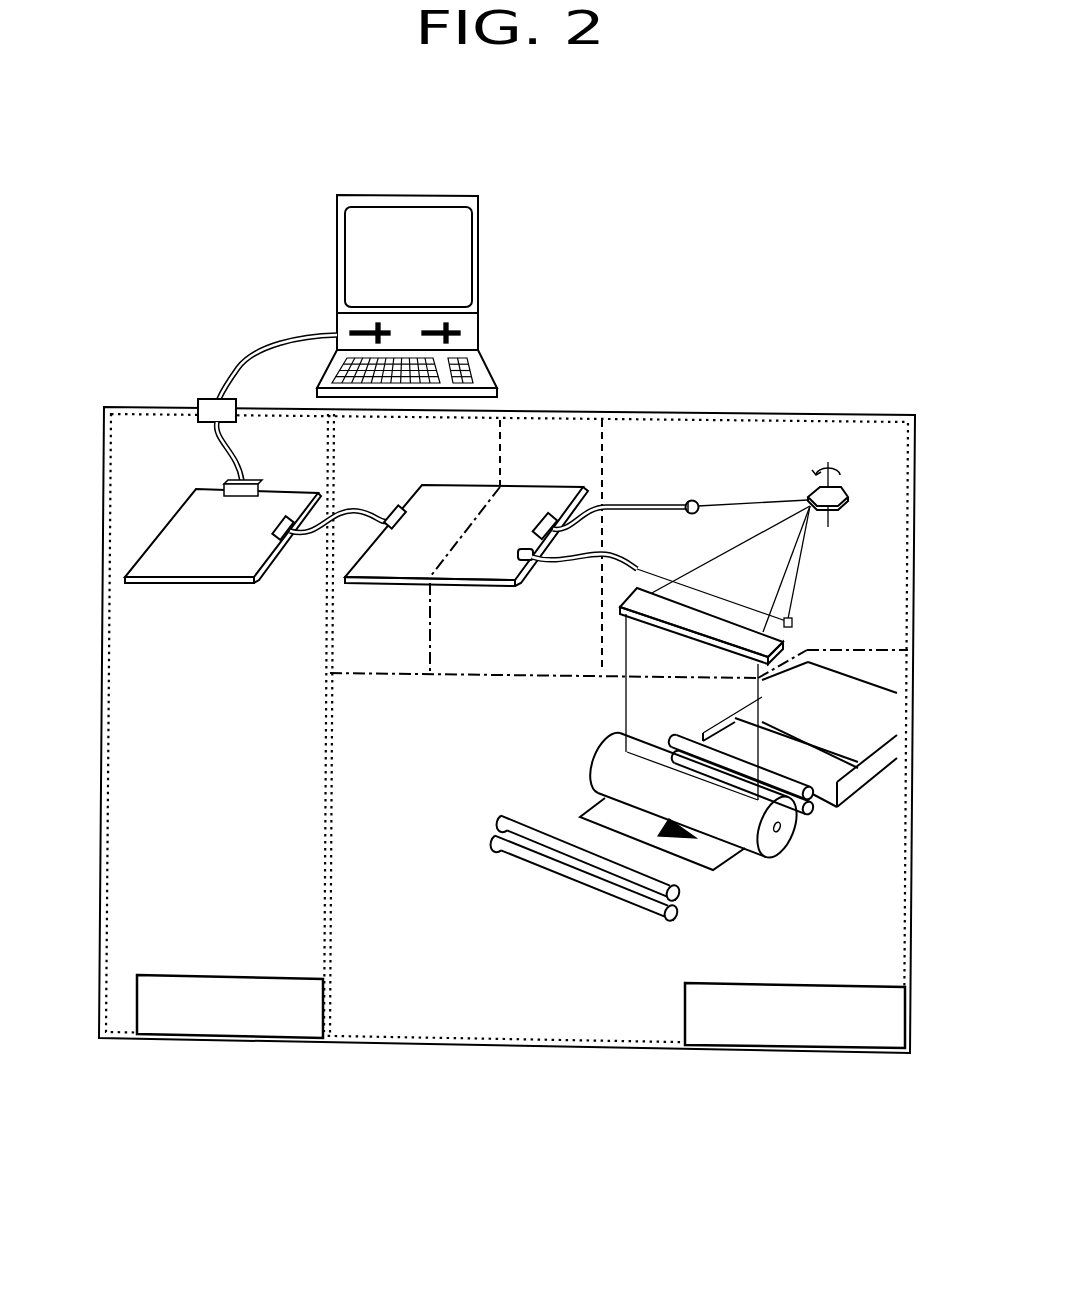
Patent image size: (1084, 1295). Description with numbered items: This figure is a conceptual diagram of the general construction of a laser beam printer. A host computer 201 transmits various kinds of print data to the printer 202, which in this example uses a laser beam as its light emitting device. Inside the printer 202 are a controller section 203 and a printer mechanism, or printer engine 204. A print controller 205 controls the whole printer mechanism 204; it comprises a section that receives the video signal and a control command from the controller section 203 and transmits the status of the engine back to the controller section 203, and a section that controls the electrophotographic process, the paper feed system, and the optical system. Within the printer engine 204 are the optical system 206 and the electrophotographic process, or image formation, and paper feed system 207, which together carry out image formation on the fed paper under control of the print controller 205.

The host computer 201 is at (462, 243).
The printer 202 is at (128, 398).
The controller section 203 is at (123, 942).
The printer mechanism (printer engine) 204 is at (677, 415).
The print controller 205 is at (552, 442).
The optical system 206 is at (880, 440).
The electrophotographic process and paper feed system 207 is at (580, 992).